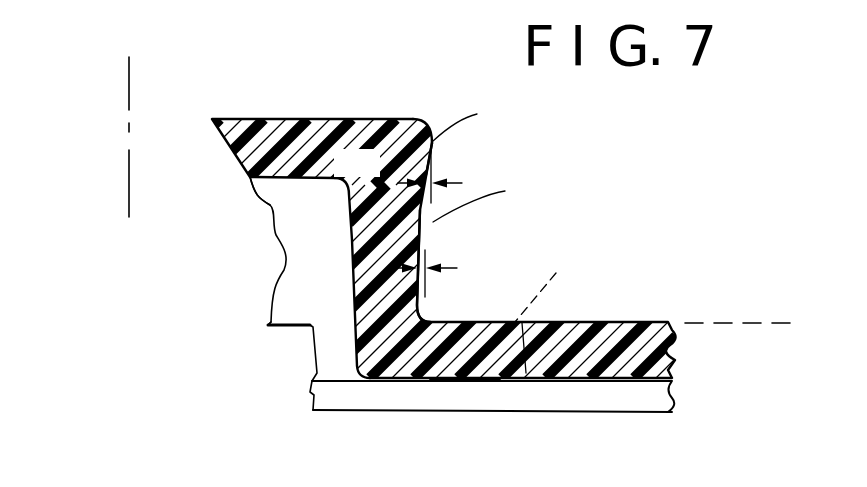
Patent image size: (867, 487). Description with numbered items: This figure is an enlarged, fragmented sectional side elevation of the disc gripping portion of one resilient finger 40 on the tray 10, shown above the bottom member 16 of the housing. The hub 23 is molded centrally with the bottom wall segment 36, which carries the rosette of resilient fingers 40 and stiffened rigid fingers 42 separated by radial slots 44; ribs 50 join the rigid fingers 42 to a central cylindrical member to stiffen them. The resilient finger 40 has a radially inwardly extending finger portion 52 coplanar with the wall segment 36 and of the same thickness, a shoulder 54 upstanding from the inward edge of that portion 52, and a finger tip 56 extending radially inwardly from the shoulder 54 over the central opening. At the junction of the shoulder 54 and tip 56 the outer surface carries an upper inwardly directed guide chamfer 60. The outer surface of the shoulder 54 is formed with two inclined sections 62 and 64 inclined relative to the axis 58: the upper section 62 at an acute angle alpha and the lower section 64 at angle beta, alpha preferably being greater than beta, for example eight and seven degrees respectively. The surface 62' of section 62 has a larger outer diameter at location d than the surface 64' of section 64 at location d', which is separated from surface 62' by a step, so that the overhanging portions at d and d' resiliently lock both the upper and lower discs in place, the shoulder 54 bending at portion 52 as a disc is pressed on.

The tray 10 is at (248, 304).
The bottom member 16 is at (637, 402).
The hub 23 is at (243, 218).
The bottom wall segment 36 is at (603, 322).
The resilient finger 40 is at (501, 214).
The rigid finger 42 is at (330, 348).
The slot 44 is at (553, 309).
The rib 50 is at (235, 279).
The finger portion 52 is at (457, 380).
The shoulder 54 is at (358, 238).
The finger tip 56 is at (257, 130).
The axis 58 is at (128, 88).
The guide chamfer 60 is at (417, 127).
The inclined section 62 is at (377, 163).
The inclined surface 62' is at (496, 147).
The inclined section 64 is at (456, 237).
The inclined surface 64' is at (477, 294).